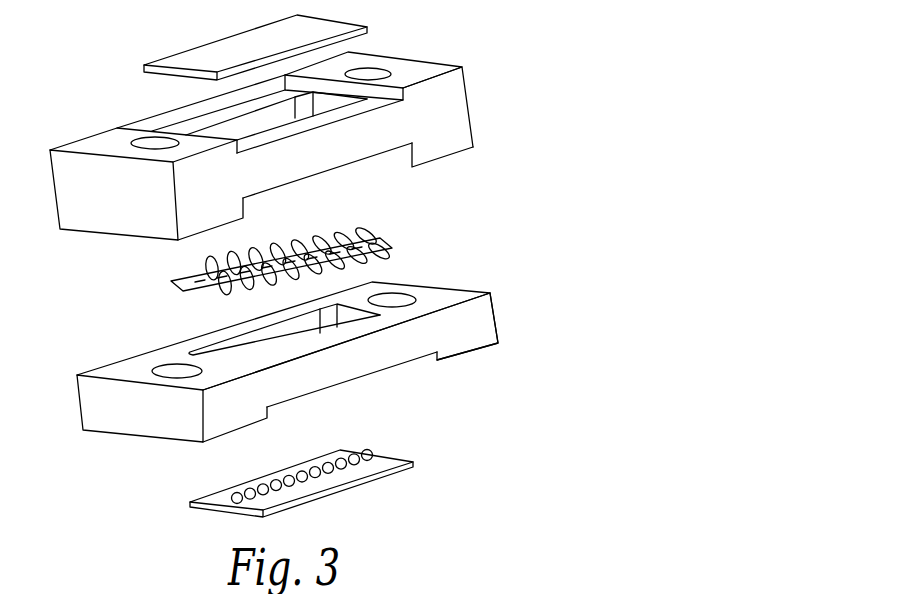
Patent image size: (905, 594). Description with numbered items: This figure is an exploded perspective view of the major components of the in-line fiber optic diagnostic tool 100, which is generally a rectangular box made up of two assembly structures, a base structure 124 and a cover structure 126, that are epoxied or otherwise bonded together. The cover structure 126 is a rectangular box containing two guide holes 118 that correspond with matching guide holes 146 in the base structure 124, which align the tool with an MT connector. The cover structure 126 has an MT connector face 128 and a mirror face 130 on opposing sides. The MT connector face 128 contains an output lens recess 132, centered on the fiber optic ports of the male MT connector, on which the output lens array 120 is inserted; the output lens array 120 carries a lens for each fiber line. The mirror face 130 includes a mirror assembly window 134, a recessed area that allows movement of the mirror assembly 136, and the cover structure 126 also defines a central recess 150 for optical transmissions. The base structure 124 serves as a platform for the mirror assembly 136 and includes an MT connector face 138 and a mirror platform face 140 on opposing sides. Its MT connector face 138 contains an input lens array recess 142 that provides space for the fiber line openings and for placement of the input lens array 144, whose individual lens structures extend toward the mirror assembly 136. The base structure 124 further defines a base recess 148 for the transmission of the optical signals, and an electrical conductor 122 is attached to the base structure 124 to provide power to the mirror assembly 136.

The in-line fiber optic diagnostic tool 100 is at (498, 242).
The guide holes 118 is at (155, 143).
The output lens array 120 is at (251, 34).
The electrical conductor 122 is at (143, 414).
The base structure 124 is at (102, 410).
The cover structure 126 is at (121, 205).
The MT connector face 128 is at (440, 70).
The mirror face 130 is at (440, 160).
The output lens recess 132 is at (342, 118).
The mirror assembly window 134 is at (306, 176).
The mirror assembly 136 is at (176, 280).
The MT connector face 138 is at (463, 357).
The mirror platform face 140 is at (296, 354).
The input lens array recess 142 is at (358, 379).
The input lens array 144 is at (348, 483).
The guide holes 146 is at (177, 370).
The base recess 148 is at (242, 347).
The central recess 150 is at (232, 130).